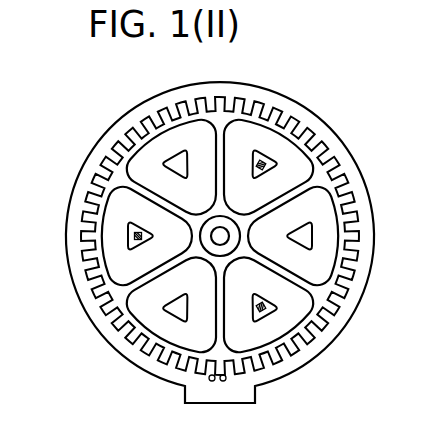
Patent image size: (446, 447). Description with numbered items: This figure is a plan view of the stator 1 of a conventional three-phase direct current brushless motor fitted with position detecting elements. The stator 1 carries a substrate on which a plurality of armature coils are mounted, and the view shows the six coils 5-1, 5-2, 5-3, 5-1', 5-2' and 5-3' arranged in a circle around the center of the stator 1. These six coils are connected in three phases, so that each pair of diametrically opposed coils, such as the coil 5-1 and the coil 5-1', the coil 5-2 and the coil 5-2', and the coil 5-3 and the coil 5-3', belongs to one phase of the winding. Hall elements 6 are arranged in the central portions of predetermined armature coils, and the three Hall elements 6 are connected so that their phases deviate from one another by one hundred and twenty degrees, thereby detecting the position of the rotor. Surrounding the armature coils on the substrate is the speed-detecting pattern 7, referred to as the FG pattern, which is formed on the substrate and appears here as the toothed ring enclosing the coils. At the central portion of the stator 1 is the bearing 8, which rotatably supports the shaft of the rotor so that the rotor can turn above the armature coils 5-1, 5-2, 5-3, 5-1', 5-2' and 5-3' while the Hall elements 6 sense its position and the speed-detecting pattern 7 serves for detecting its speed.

The stator 1 is at (347, 129).
The speed-detecting pattern 7 is at (355, 255).
The bearing 8 is at (223, 217).
The Hall element 6 is at (262, 307).
The armature coil 5-1 is at (276, 150).
The armature coil 5-1' is at (171, 323).
The armature coil 5-2 is at (334, 222).
The armature coil 5-2' is at (110, 220).
The armature coil 5-3 is at (296, 299).
The armature coil 5-3' is at (174, 146).